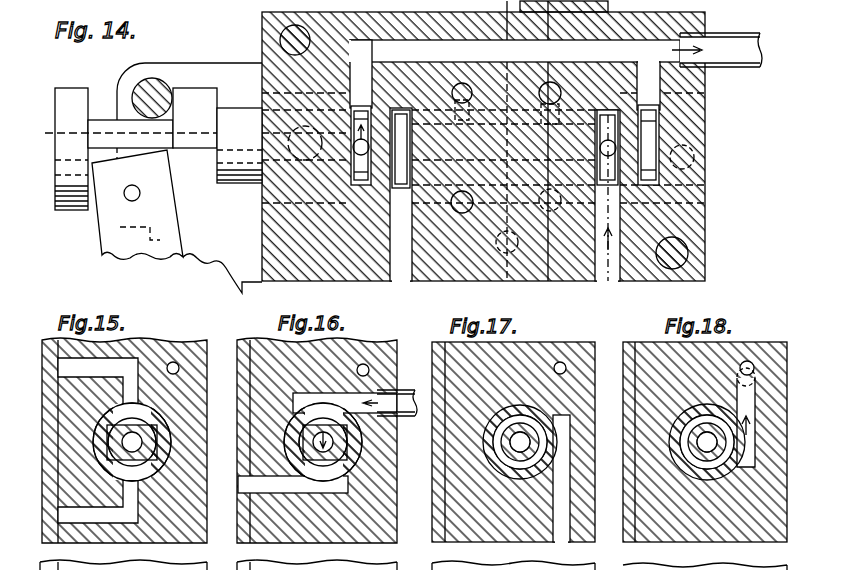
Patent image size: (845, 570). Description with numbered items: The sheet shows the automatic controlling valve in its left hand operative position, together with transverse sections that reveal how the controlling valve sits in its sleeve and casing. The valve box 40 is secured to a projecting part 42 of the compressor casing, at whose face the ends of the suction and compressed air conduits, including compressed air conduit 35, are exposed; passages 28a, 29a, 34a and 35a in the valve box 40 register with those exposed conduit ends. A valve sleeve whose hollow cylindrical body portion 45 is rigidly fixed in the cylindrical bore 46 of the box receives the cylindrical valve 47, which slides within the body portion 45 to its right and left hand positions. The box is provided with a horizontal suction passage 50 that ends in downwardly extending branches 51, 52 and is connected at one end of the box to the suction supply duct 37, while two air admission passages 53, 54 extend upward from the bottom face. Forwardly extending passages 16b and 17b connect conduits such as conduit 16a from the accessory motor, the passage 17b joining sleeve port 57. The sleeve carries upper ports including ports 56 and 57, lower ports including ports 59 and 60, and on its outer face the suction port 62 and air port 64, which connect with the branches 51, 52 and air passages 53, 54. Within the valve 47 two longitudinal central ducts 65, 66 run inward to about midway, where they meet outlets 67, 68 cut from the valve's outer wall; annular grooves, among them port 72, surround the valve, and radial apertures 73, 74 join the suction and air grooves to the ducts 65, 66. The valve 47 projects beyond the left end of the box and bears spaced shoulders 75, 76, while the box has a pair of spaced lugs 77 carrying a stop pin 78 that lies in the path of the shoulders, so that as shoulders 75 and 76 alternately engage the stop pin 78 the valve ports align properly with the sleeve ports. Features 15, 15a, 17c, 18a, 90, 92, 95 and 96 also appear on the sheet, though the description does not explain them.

In FIG. 14, the valve box 40 is at (502, 141).
In FIG. 15, the valve box 40 is at (150, 345).
In FIG. 16, the valve box 40 is at (262, 350).
In FIG. 17, the valve box 40 is at (547, 345).
In FIG. 18, the valve box 40 is at (688, 569).
In FIG. 15, the projecting part of the compressor casing 42 is at (48, 340).
In FIG. 17, the projecting part of the compressor casing 42 is at (432, 452).
In FIG. 15, the body portion of the valve sleeve 45 is at (167, 437).
In FIG. 16, the body portion of the valve sleeve 45 is at (355, 445).
In FIG. 17, the body portion of the valve sleeve 45 is at (497, 443).
In FIG. 18, the body portion of the valve sleeve 45 is at (710, 443).
In FIG. 18, the cylindrical bore 46 is at (680, 415).
In FIG. 14, the cylindrical valve 47 is at (226, 172).
In FIG. 15, the cylindrical valve 47 is at (126, 448).
In FIG. 16, the cylindrical valve 47 is at (357, 435).
In FIG. 14, the horizontal suction passage 50 is at (621, 50).
In FIG. 15, the horizontal suction passage 50 is at (176, 362).
In FIG. 16, the horizontal suction passage 50 is at (370, 364).
In FIG. 17, the horizontal suction passage 50 is at (565, 362).
In FIG. 18, the horizontal suction passage 50 is at (750, 360).
In FIG. 14, the downwardly extending branch 51 is at (361, 112).
In FIG. 14, the downwardly extending branch 52 is at (640, 70).
In FIG. 18, the downwardly extending branch 52 is at (747, 417).
In FIG. 14, the air admission passage 53 is at (402, 194).
In FIG. 14, the air admission passage 54 is at (607, 195).
In FIG. 17, the air admission passage 54 is at (562, 478).
In FIG. 15, the port 56 is at (132, 440).
In FIG. 16, the port 57 is at (323, 439).
In FIG. 15, the port 59 is at (134, 450).
In FIG. 16, the port 60 is at (325, 452).
In FIG. 18, the suction port 62 is at (720, 443).
In FIG. 17, the air port 64 is at (530, 435).
In FIG. 15, the longitudinal central duct 65 is at (153, 427).
In FIG. 16, the longitudinal central duct 65 is at (221, 370).
In FIG. 17, the longitudinal central duct 66 is at (507, 450).
In FIG. 18, the longitudinal central duct 66 is at (707, 432).
In FIG. 15, the outlet 67 is at (150, 430).
In FIG. 16, the outlet 67 is at (320, 465).
In FIG. 14, the outlet 68 is at (201, 280).
In FIG. 15, the outlet 68 is at (108, 380).
In FIG. 16, the outlet 68 is at (322, 432).
In FIG. 17, the annular groove or port 72 is at (535, 447).
In FIG. 14, the radial aperture 73 is at (360, 135).
In FIG. 14, the radial aperture 74 is at (605, 146).
In FIG. 18, the radial aperture 74 is at (722, 450).
In FIG. 14, the shoulder 75 is at (95, 88).
In FIG. 14, the shoulder 76 is at (175, 110).
In FIG. 14, the lug 77 is at (238, 263).
In FIG. 14, the stop pin 78 is at (162, 80).
In FIG. 14, the pin 90 is at (140, 196).
In FIG. 14, the plate 92 is at (137, 204).
In FIG. 14, the gear 95 is at (85, 212).
In FIG. 14, the collar 96 is at (217, 166).
In FIG. 14, the pipe 15 is at (528, 6).
In FIG. 14, the pipe connection 15a is at (507, 290).
In FIG. 14, the conduit 16a is at (552, 203).
In FIG. 14, the forwardly extending passage 16b is at (550, 85).
In FIG. 16, the forwardly extending passage 16b is at (408, 390).
In FIG. 14, the forwardly extending passage 17b is at (462, 210).
In FIG. 14, the pipe connection 17c is at (600, 290).
In FIG. 14, the pipe connection 18a is at (648, 296).
In FIG. 14, the passage 28a is at (515, 80).
In FIG. 15, the passage 28a is at (98, 381).
In FIG. 14, the passage 29a is at (495, 247).
In FIG. 15, the passage 29a is at (112, 519).
In FIG. 14, the passage 34a is at (444, 51).
In FIG. 16, the compressed air conduit 35 is at (257, 481).
In FIG. 14, the passage 35a is at (552, 306).
In FIG. 16, the passage 35a is at (248, 490).
In FIG. 14, the suction supply duct 37 is at (742, 30).